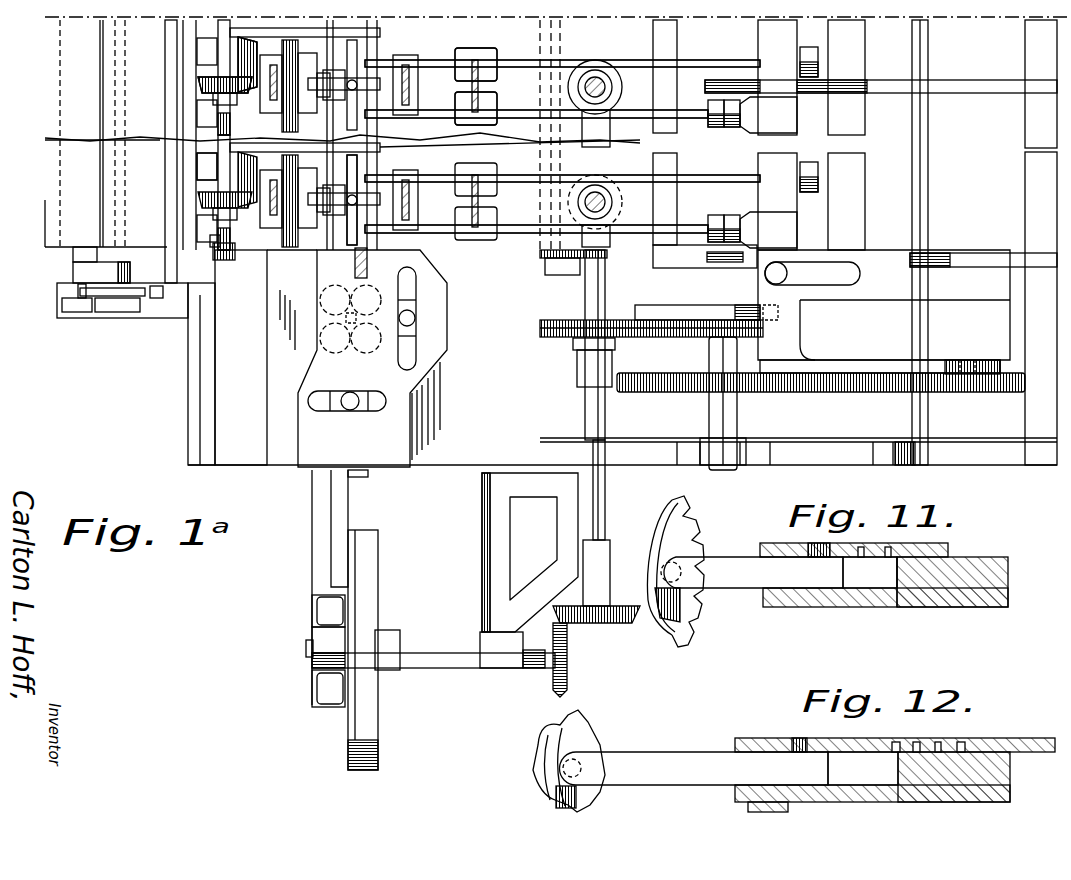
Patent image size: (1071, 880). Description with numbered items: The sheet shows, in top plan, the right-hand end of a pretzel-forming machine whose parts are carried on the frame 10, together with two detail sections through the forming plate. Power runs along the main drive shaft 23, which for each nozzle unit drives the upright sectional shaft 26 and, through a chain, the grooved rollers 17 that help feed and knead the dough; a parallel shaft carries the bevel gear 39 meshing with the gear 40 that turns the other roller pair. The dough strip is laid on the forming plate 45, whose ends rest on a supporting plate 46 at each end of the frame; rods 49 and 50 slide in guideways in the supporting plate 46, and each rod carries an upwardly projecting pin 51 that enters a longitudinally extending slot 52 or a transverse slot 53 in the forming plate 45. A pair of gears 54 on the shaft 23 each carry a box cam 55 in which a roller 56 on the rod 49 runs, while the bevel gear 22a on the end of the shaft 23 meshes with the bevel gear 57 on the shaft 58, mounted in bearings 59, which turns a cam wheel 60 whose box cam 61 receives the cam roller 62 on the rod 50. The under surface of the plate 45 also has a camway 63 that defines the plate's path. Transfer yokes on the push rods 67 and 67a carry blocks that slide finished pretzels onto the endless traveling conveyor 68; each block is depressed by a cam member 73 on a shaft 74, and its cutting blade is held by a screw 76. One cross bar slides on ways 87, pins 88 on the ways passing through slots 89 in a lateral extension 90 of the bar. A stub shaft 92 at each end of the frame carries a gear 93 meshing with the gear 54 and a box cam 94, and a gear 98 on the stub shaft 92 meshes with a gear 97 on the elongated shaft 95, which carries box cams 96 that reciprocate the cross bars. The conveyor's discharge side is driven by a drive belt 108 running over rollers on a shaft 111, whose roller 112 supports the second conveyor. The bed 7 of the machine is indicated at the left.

In FIG. 1A, the bed 7 is at (22, 218).
In FIG. 1A, the frame 10 is at (190, 385).
In FIG. 1A, the roller 17 is at (408, 195).
In FIG. 1A, the bevel gear 22a is at (562, 562).
In FIG. 1A, the main drive shaft 23 is at (604, 283).
In FIG. 1A, the upright sectional shaft 26 is at (608, 105).
In FIG. 1A, the bevel gear 39 is at (240, 97).
In FIG. 1A, the gear 40 is at (255, 45).
In FIG. 11, the forming plate 45 is at (926, 553).
In FIG. 1A, the supporting plate 46 is at (268, 355).
In FIG. 11, the supporting plate 46 is at (930, 606).
In FIG. 1A, the rod 49 is at (737, 553).
In FIG. 12, the rod 50 is at (694, 768).
In FIG. 11, the pin 51 is at (820, 553).
In FIG. 1A, the longitudinally extending slot 52 is at (412, 355).
In FIG. 1A, the transverse slot 53 is at (325, 410).
In FIG. 1A, the gear 54 is at (652, 337).
In FIG. 1A, the box cam 55 is at (690, 612).
In FIG. 1A, the roller 56 is at (683, 573).
In FIG. 1A, the bevel gear 57 is at (568, 655).
In FIG. 1A, the shaft 58 is at (440, 662).
In FIG. 1A, the bearing 59 is at (312, 660).
In FIG. 1A, the cam wheel 60 is at (375, 708).
In FIG. 12, the cam wheel 60 is at (612, 745).
In FIG. 12, the box cam 61 is at (600, 793).
In FIG. 12, the cam roller 62 is at (545, 778).
In FIG. 1A, the camway 63 is at (356, 352).
In FIG. 11, the camway 63 is at (858, 560).
In FIG. 1A, the push rod 67 is at (432, 108).
In FIG. 1A, the push rod 67a is at (495, 55).
In FIG. 1A, the endless traveling conveyor 68 is at (437, 160).
In FIG. 1A, the cam member 73 is at (197, 165).
In FIG. 1A, the shaft 74 is at (226, 259).
In FIG. 1A, the screw 76 is at (393, 160).
In FIG. 1A, the way 87 is at (975, 92).
In FIG. 1A, the pin 88 is at (777, 282).
In FIG. 1A, the slot 89 is at (855, 278).
In FIG. 1A, the lateral extension 90 is at (893, 300).
In FIG. 1A, the stub shaft 92 is at (736, 410).
In FIG. 1A, the gear 93 is at (705, 338).
In FIG. 1A, the box cam 94 is at (712, 312).
In FIG. 1A, the elongated shaft 95 is at (928, 305).
In FIG. 1A, the box cam 96 is at (968, 368).
In FIG. 1A, the gear 97 is at (1000, 373).
In FIG. 1A, the gear 98 is at (693, 392).
In FIG. 1A, the drive belt 108 is at (101, 272).
In FIG. 1A, the shaft 111 is at (78, 292).
In FIG. 1A, the roller 112 is at (73, 255).